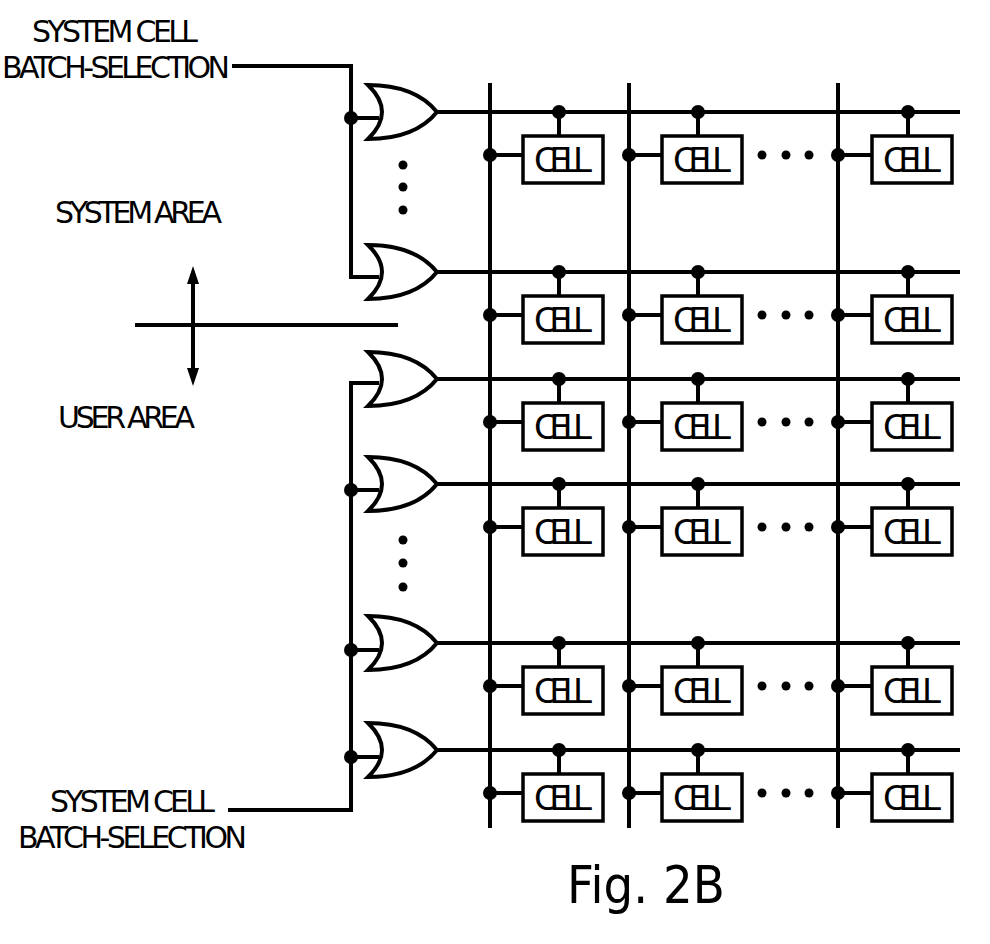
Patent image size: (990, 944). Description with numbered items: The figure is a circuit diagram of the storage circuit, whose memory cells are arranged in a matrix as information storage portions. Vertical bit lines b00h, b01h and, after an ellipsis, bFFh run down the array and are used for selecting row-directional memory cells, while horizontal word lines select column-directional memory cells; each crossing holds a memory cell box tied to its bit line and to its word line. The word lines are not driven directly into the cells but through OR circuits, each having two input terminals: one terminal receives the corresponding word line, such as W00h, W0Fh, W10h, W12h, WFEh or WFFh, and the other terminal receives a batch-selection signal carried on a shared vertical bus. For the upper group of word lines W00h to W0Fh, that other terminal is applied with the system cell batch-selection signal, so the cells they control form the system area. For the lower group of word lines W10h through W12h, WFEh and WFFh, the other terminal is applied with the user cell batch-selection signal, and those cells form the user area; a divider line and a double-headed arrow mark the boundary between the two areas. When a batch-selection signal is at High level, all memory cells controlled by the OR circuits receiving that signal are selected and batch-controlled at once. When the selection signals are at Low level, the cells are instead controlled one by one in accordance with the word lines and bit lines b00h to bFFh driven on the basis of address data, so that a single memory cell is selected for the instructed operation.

The word line W00h is at (379, 102).
The word line W0Fh is at (379, 262).
The word line W10h is at (379, 368).
The word line W12h is at (379, 474).
The word line WFEh is at (379, 632).
The word line WFFh is at (379, 740).
The bit line b00h is at (497, 434).
The bit line b01h is at (638, 434).
The bit line bFFh is at (847, 434).